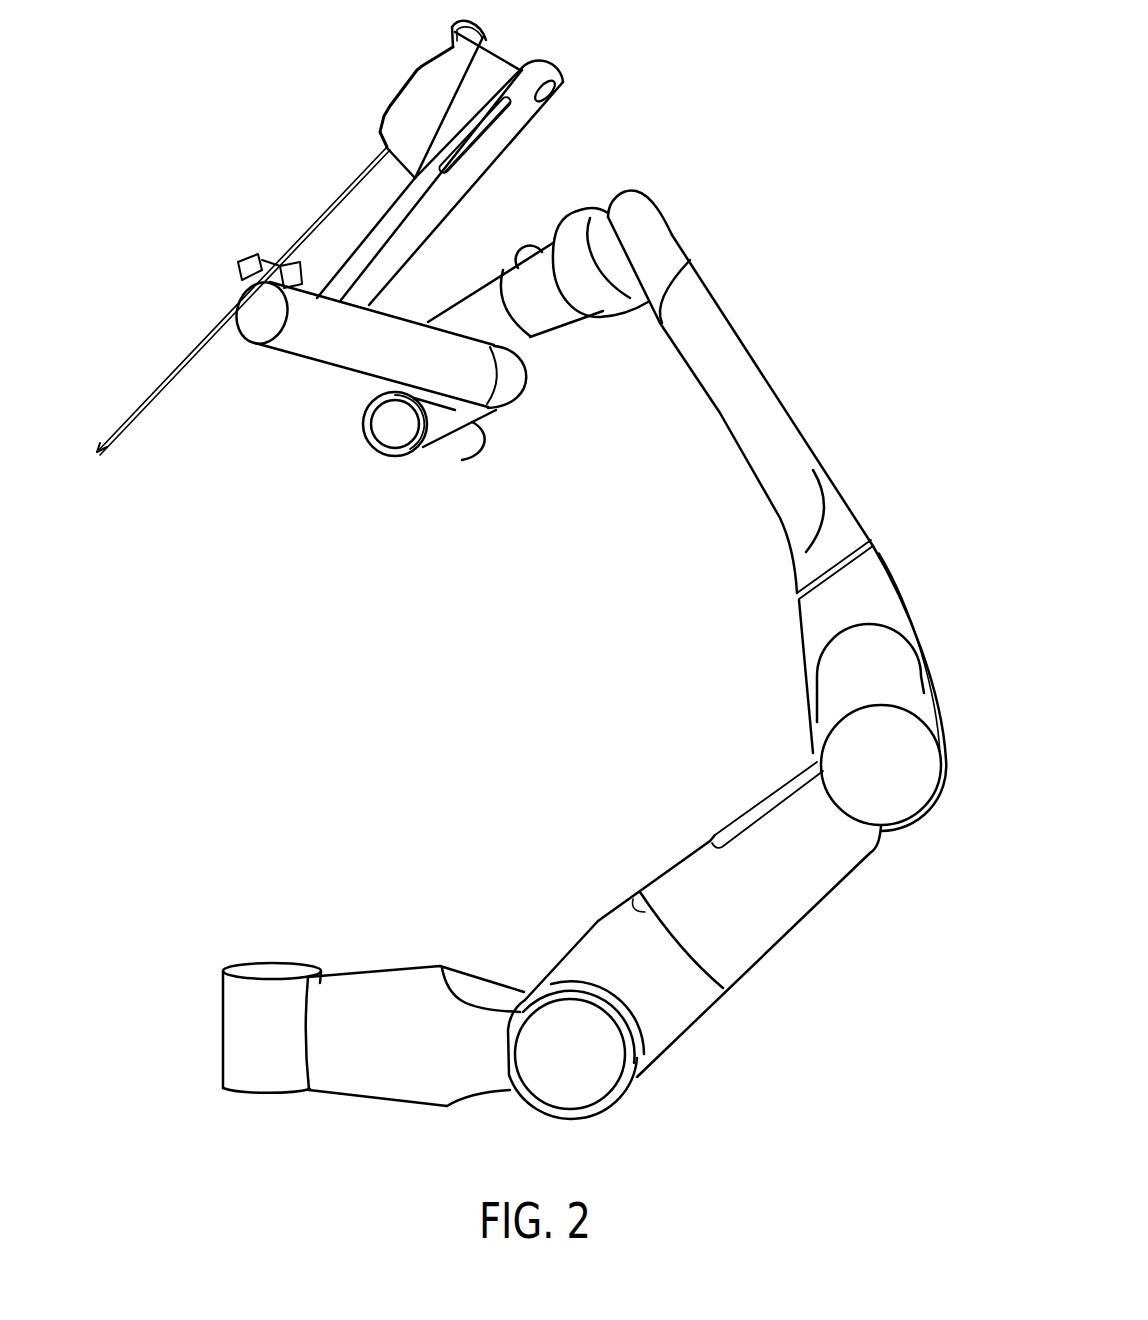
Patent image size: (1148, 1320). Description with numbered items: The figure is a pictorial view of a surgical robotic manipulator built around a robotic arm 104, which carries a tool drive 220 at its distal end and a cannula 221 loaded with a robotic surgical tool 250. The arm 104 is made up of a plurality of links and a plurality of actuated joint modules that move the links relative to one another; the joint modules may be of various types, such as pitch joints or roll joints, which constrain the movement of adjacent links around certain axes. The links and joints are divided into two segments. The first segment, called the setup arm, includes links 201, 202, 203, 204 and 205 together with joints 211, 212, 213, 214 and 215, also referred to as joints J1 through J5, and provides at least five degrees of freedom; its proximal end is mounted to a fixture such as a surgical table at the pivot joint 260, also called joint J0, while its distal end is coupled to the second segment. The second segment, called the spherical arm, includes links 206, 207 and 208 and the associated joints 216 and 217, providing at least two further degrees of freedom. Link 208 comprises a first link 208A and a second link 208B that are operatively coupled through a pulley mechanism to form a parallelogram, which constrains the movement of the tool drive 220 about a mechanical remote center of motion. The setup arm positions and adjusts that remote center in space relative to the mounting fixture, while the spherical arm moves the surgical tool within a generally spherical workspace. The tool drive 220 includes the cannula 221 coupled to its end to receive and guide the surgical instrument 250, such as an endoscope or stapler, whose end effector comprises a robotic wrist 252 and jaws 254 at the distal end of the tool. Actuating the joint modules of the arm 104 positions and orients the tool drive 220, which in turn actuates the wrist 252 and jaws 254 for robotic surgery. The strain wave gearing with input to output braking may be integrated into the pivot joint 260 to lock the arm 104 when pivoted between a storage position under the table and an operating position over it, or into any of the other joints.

The robotic arm 104 is at (735, 240).
The link 201 is at (435, 1096).
The link 202 is at (686, 1020).
The link 203 is at (803, 900).
The link 204 is at (900, 613).
The link 205 is at (767, 381).
The link 206 is at (530, 253).
The link 207 is at (462, 298).
The link 208 is at (341, 383).
The first link 208A is at (463, 443).
The second link 208B is at (296, 362).
The joint 211 is at (547, 1000).
The joint 212 is at (638, 905).
The joint 213 is at (823, 752).
The joint 214 is at (808, 583).
The joint 215 is at (592, 210).
The joint 216 is at (544, 334).
The joint 217 is at (376, 451).
The tool drive 220 is at (506, 61).
The cannula 221 is at (249, 281).
The surgical instrument 250 is at (344, 176).
The robotic wrist 252 is at (105, 441).
The jaws 254 is at (104, 458).
The pivot joint 260 is at (267, 966).